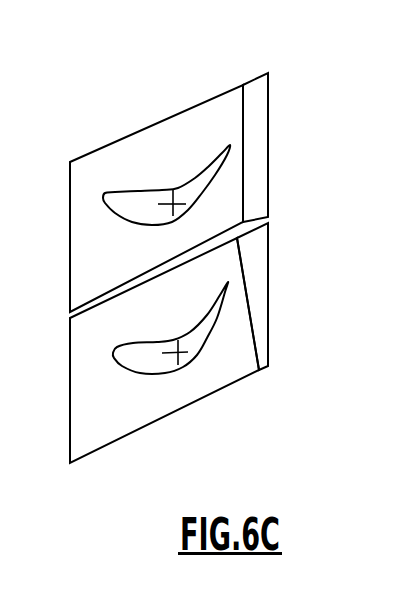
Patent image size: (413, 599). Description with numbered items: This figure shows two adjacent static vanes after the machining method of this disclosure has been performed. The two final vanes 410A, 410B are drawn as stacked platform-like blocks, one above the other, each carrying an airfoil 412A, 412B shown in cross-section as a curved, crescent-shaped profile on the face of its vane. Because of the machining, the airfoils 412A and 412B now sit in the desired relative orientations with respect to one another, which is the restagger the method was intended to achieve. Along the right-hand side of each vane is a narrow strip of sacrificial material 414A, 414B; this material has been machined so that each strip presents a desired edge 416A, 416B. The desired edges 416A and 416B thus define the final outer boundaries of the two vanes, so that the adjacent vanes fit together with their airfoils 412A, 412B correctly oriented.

The final vane 410A is at (168, 124).
The airfoil 412A is at (169, 198).
The sacrificial material 414A is at (260, 127).
The desired edge 416A is at (268, 84).
The final vane 410B is at (123, 427).
The airfoil 412B is at (163, 365).
The sacrificial material 414B is at (260, 307).
The desired edge 416B is at (265, 262).